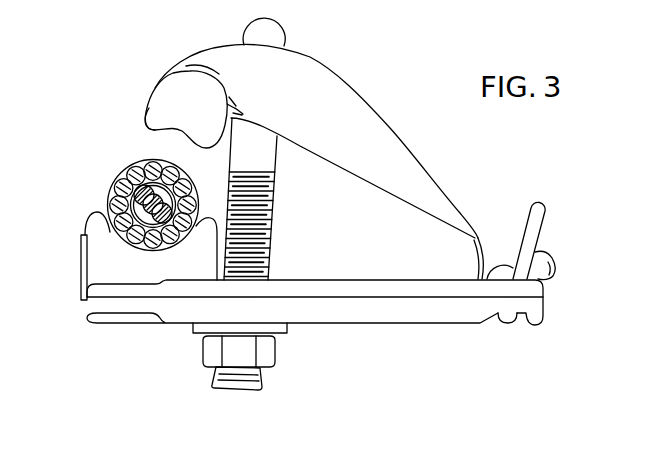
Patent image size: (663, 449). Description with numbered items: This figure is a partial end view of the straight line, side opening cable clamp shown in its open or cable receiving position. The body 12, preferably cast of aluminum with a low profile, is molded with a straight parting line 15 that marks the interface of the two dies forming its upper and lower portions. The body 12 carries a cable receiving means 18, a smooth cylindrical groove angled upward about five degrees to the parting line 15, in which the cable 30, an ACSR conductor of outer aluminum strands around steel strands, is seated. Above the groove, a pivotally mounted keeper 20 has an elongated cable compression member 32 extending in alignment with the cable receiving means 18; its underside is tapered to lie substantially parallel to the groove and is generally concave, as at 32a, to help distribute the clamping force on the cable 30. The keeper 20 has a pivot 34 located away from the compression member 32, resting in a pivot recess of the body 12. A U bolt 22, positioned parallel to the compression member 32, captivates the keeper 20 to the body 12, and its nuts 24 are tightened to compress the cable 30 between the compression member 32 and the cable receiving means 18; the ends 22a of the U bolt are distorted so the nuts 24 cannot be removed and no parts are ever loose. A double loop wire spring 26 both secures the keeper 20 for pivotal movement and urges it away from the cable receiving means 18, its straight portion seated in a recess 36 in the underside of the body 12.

The body 12 is at (167, 333).
The parting line 15 is at (425, 298).
The cable receiving means 18 is at (126, 242).
The keeper 20 is at (353, 87).
The U bolt 22 is at (243, 36).
The ends of U bolt 22a is at (250, 389).
The nuts 24 is at (276, 352).
The double loop wire spring 26 is at (537, 240).
The cable 30 is at (110, 188).
The cable compression member 32 is at (153, 93).
The concave underside of cable compression member 32a is at (150, 133).
The pivot 34 is at (474, 265).
The recess 36 is at (497, 313).